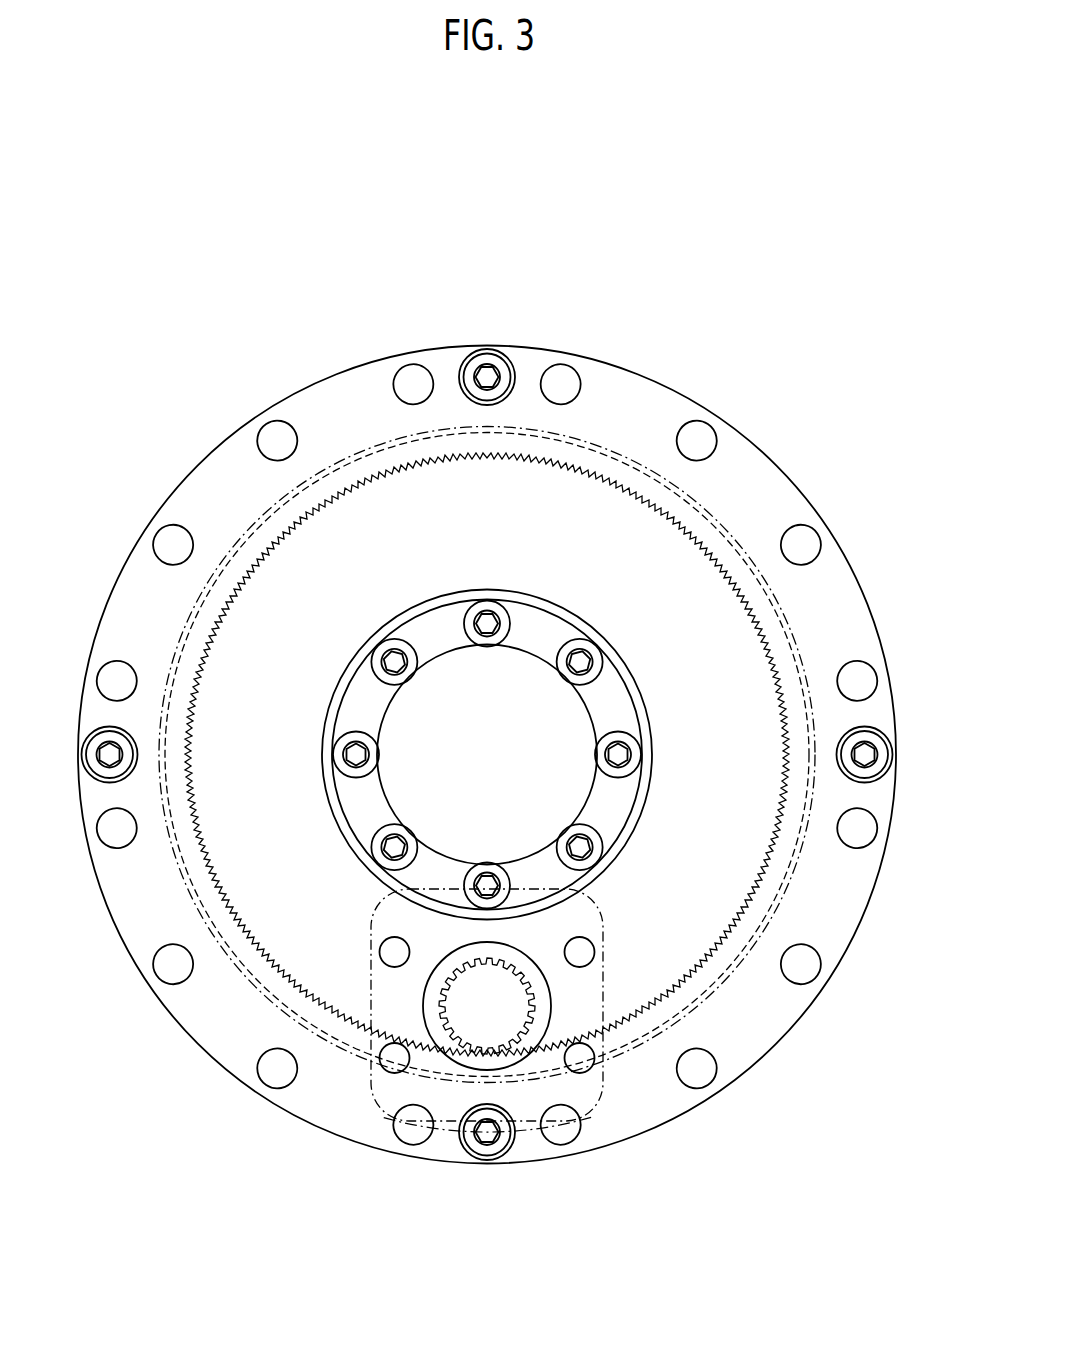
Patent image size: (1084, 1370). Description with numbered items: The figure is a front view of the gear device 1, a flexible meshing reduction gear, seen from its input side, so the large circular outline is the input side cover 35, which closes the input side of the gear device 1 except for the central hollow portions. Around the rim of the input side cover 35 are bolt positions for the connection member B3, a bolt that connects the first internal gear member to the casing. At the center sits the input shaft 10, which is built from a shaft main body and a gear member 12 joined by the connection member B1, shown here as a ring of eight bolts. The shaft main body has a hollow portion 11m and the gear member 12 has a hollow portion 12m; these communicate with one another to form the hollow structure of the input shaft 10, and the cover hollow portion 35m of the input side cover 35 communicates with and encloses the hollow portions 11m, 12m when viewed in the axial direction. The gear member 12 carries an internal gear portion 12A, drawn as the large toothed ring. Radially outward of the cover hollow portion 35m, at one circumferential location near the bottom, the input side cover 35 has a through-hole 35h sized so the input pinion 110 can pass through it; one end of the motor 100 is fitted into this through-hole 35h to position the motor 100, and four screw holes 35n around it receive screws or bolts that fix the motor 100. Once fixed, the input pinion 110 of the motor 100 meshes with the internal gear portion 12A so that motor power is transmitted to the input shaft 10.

The gear device 1 is at (585, 239).
The input side cover 35 is at (362, 382).
The connection member B3 is at (868, 747).
The internal gear portion 12A is at (200, 850).
The input shaft 10 is at (579, 657).
The gear member 12 is at (555, 632).
The cover hollow portion 35m is at (574, 785).
The hollow portion 11m is at (656, 829).
The hollow portion 12m is at (487, 755).
The connection member B1 is at (490, 622).
The motor 100 is at (603, 1085).
The screw hole 35n is at (380, 953).
The through-hole 35h is at (462, 1067).
The input pinion 110 is at (505, 1030).